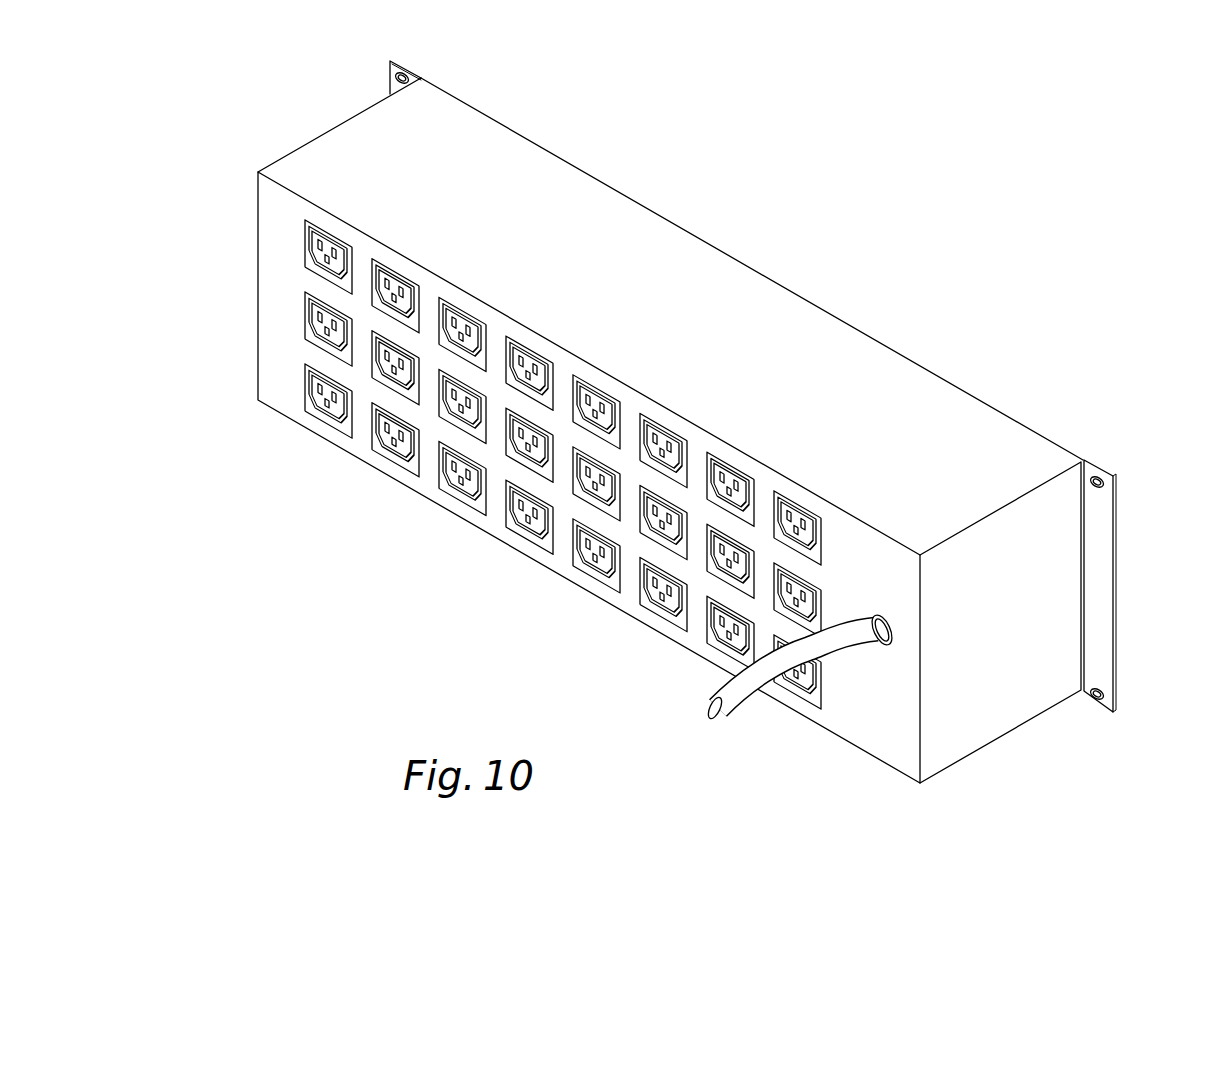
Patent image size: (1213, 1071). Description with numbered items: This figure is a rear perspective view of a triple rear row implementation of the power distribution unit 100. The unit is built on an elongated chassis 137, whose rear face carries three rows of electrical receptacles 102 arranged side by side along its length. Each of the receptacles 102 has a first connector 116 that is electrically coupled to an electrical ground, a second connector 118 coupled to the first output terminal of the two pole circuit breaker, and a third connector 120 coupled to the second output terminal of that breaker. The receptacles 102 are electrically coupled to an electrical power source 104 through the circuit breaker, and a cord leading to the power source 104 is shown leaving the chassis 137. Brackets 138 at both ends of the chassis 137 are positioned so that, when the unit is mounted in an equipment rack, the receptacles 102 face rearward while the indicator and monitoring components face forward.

The power distribution unit 100 is at (292, 672).
The electrical receptacles 102 is at (393, 267).
The electrical power source 104 is at (744, 716).
The first connector 116 is at (317, 327).
The second connector 118 is at (320, 313).
The third connector 120 is at (333, 302).
The chassis 137 is at (732, 278).
The brackets 138 is at (389, 73).